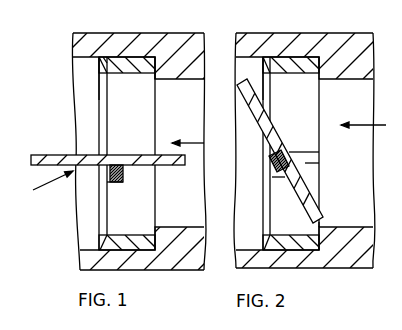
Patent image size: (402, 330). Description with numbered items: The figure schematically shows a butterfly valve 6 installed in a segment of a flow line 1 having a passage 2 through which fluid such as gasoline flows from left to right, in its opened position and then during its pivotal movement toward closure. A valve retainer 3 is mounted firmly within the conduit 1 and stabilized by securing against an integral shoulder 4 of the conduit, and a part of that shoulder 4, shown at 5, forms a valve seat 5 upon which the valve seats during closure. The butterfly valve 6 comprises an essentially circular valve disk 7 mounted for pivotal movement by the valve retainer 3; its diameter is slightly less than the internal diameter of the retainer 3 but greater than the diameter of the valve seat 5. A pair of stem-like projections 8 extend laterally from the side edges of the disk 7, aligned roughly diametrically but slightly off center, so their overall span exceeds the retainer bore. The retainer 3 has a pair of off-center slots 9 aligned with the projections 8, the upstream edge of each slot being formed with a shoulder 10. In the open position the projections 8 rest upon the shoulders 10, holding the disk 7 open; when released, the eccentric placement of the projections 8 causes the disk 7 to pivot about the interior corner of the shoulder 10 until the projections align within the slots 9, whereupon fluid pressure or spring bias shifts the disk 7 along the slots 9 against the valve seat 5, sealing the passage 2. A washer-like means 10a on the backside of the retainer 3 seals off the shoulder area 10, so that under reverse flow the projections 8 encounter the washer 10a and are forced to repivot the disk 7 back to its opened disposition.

In FIG. 1, the flow line 1 is at (142, 38).
In FIG. 2, the flow line 1 is at (304, 37).
In FIG. 1, the passage 2 is at (197, 144).
In FIG. 2, the passage 2 is at (371, 126).
In FIG. 1, the valve retainer 3 is at (100, 68).
In FIG. 2, the valve retainer 3 is at (279, 68).
In FIG. 1, the integral shoulder 4 is at (160, 63).
In FIG. 2, the integral shoulder 4 is at (323, 62).
In FIG. 1, the valve seat 5 is at (155, 80).
In FIG. 2, the valve seat 5 is at (320, 222).
In FIG. 1, the butterfly valve 6 is at (48, 185).
In FIG. 1, the valve disk 7 is at (75, 155).
In FIG. 2, the valve disk 7 is at (268, 138).
In FIG. 1, the projections 8 is at (110, 175).
In FIG. 2, the projections 8 is at (274, 163).
In FIG. 2, the slots 9 is at (307, 154).
In FIG. 1, the shoulder 10 is at (123, 168).
In FIG. 2, the shoulder 10 is at (284, 176).
In FIG. 1, the washer-like means 10a is at (101, 100).
In FIG. 2, the washer-like means 10a is at (266, 95).